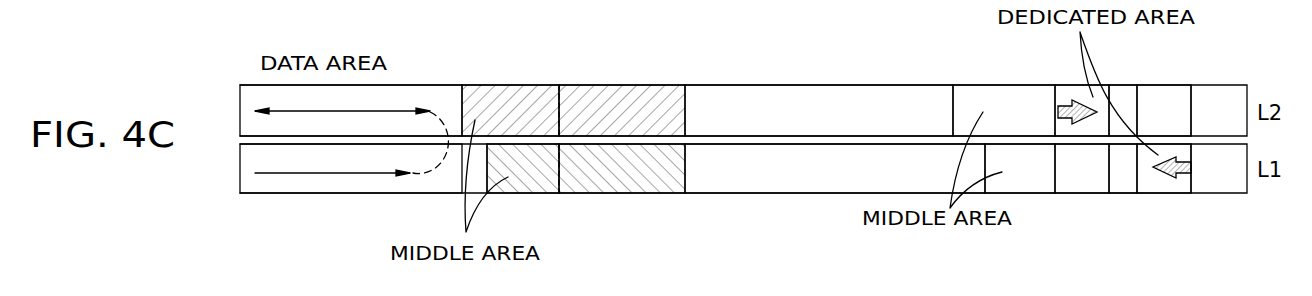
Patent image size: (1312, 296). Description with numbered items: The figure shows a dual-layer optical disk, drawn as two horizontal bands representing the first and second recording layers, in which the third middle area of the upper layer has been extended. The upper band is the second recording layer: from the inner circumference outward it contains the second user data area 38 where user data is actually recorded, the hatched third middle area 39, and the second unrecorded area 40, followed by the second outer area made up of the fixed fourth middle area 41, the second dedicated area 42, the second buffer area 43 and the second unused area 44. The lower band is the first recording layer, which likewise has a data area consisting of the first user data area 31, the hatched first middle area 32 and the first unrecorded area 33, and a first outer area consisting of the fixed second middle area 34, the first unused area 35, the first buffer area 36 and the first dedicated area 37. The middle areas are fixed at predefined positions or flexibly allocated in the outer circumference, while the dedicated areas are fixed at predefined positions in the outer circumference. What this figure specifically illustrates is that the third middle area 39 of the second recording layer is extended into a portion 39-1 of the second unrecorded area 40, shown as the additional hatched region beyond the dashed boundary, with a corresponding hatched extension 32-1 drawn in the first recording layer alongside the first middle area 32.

The first user data area 31 is at (331, 183).
The first middle area 32 is at (541, 185).
The extended middle area of first recording layer L1 32-1 is at (633, 185).
The first unrecorded area 33 is at (714, 195).
The fixed second middle area 34 is at (1036, 185).
The first unused area 35 is at (1082, 180).
The first buffer area 36 is at (1122, 180).
The first dedicated area 37 is at (1180, 183).
The second user data area 38 is at (420, 95).
The third middle area 39 is at (503, 95).
The portion of the second unrecorded area 39-1 is at (593, 95).
The second unrecorded area 40 is at (714, 95).
The fixed fourth middle area 41 is at (983, 95).
The second dedicated area 42 is at (1062, 93).
The second buffer area 43 is at (1122, 93).
The second unused area 44 is at (1160, 98).